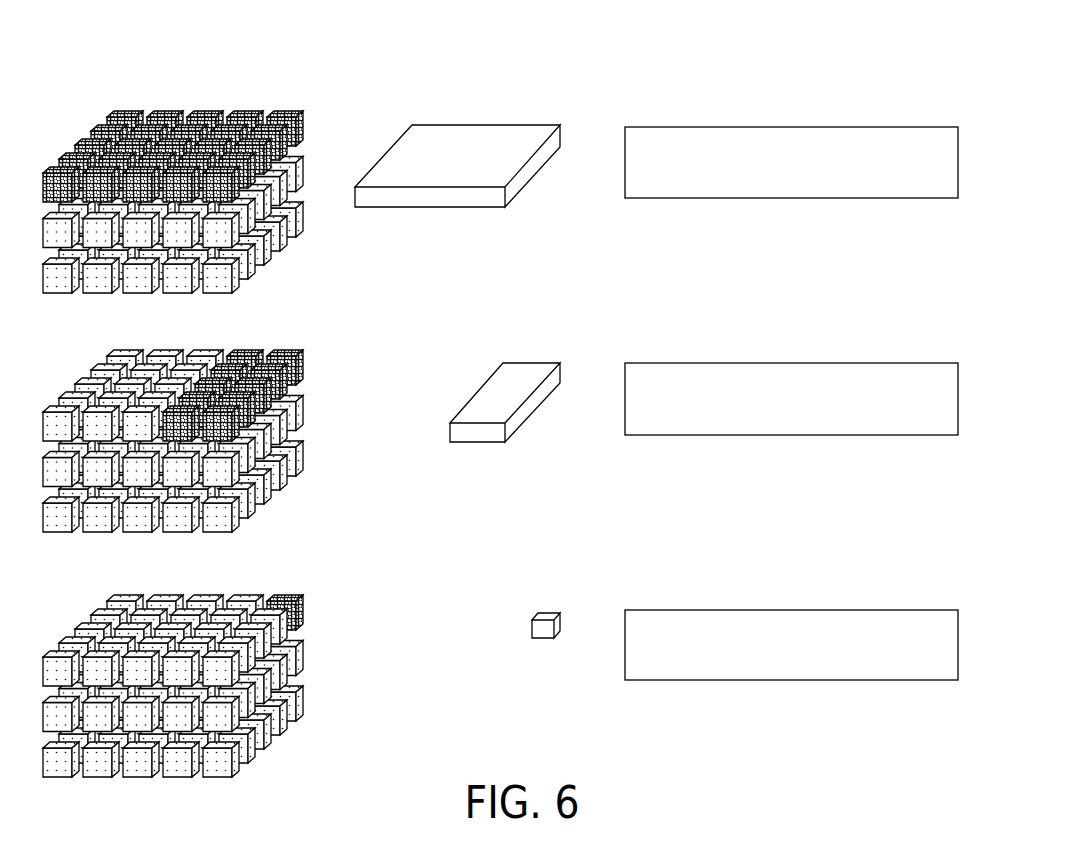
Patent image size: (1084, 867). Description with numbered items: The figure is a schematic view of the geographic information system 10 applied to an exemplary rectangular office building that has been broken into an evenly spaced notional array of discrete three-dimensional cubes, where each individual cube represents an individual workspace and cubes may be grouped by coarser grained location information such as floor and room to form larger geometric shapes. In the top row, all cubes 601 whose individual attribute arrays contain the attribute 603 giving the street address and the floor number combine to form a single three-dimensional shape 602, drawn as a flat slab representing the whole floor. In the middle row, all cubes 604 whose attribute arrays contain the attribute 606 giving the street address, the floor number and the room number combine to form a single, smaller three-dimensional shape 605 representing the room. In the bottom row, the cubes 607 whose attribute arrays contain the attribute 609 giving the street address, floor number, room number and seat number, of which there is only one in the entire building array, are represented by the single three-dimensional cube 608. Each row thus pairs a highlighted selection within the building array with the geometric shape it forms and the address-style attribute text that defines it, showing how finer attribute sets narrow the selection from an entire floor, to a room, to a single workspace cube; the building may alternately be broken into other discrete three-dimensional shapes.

The geographic information system 10 is at (875, 52).
The cubes 601 is at (251, 107).
The three-dimensional shape 602 is at (546, 125).
The attribute 603 is at (831, 126).
The cubes 604 is at (251, 345).
The three-dimensional shape 605 is at (547, 362).
The attribute 606 is at (831, 362).
The cubes 607 is at (251, 592).
The three-dimensional cube 608 is at (547, 611).
The attribute 609 is at (831, 609).